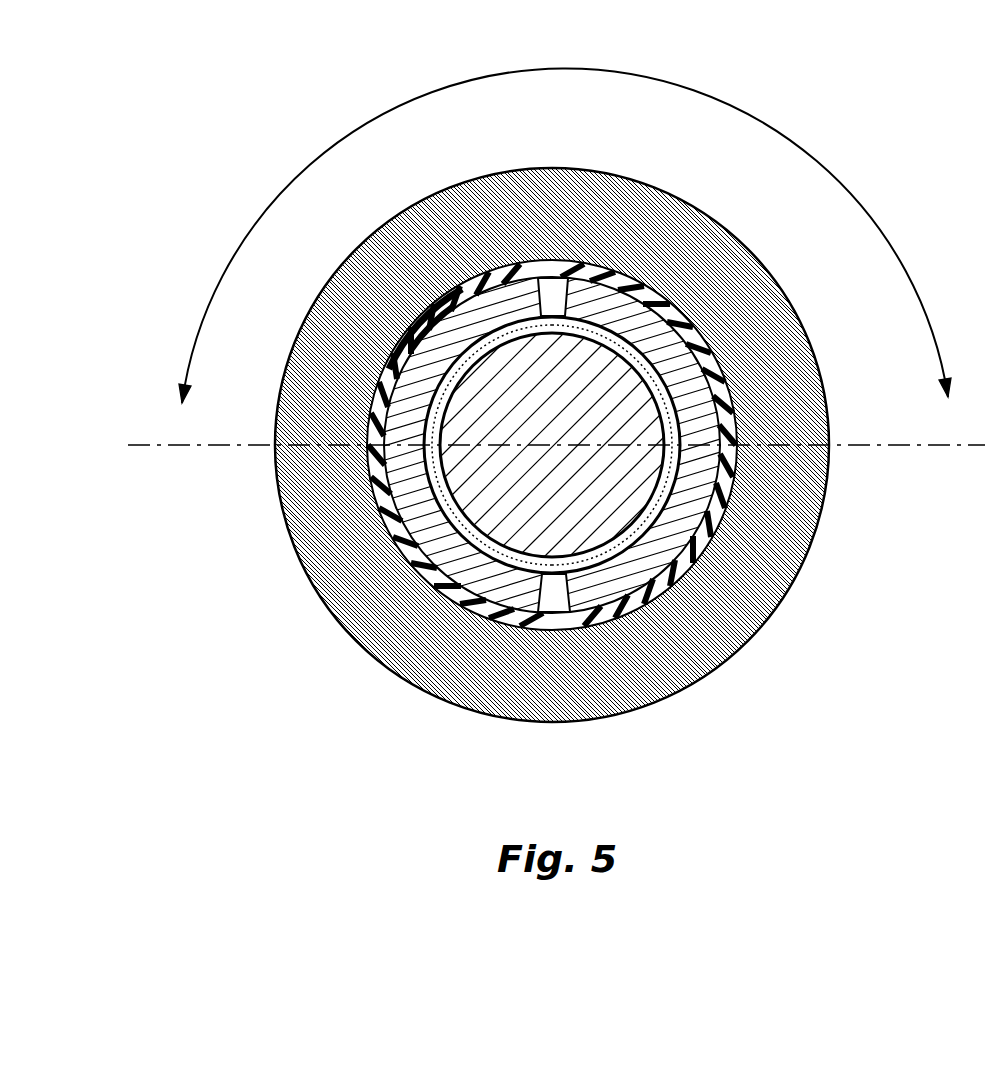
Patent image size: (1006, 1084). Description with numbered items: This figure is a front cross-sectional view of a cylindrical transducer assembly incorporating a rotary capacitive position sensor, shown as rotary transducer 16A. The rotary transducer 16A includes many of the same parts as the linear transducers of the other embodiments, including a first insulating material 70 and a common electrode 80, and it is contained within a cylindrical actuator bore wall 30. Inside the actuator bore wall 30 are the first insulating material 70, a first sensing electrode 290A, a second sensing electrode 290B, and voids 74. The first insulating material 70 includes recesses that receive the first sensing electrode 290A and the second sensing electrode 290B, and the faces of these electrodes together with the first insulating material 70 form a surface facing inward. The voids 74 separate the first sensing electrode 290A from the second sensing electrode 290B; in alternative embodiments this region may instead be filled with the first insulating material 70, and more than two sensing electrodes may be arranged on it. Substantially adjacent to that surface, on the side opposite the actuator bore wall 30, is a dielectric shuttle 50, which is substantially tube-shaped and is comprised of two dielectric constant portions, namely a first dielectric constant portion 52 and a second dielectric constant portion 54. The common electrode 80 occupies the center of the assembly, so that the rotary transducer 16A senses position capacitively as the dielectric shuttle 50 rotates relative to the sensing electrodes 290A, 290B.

The actuator bore wall 30 is at (425, 636).
The rotary transducer 16A is at (603, 278).
The dielectric shuttle 50 is at (693, 455).
The first insulating material 70 is at (670, 298).
The voids 74 is at (548, 302).
The second dielectric constant portion 54 is at (433, 395).
The first sensing electrode 290A is at (422, 503).
The second sensing electrode 290B is at (677, 375).
The first dielectric constant portion 52 is at (430, 475).
The common electrode 80 is at (563, 479).